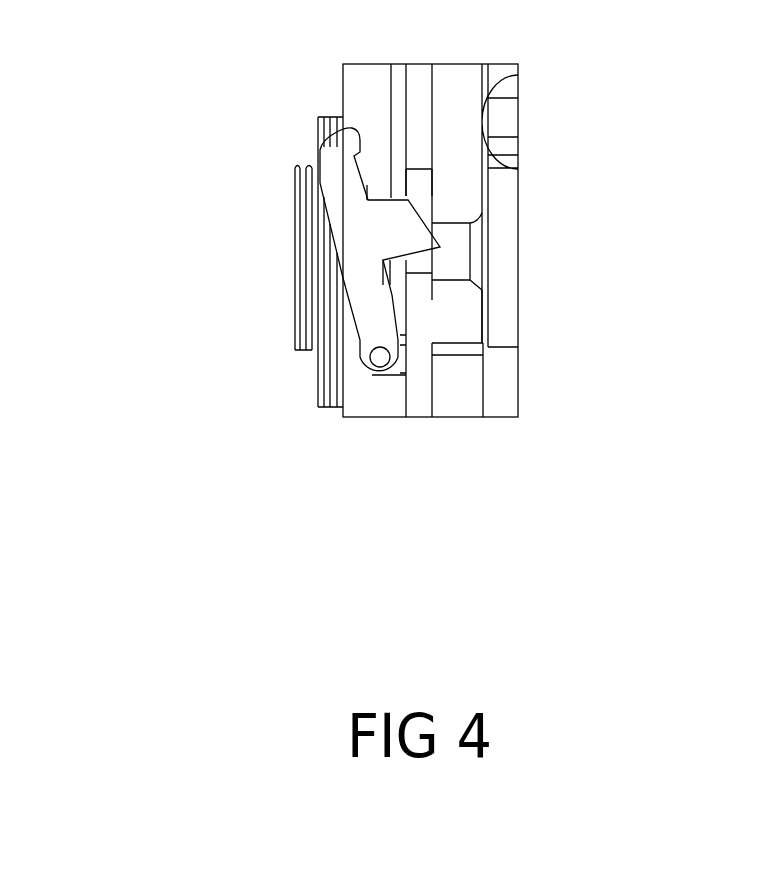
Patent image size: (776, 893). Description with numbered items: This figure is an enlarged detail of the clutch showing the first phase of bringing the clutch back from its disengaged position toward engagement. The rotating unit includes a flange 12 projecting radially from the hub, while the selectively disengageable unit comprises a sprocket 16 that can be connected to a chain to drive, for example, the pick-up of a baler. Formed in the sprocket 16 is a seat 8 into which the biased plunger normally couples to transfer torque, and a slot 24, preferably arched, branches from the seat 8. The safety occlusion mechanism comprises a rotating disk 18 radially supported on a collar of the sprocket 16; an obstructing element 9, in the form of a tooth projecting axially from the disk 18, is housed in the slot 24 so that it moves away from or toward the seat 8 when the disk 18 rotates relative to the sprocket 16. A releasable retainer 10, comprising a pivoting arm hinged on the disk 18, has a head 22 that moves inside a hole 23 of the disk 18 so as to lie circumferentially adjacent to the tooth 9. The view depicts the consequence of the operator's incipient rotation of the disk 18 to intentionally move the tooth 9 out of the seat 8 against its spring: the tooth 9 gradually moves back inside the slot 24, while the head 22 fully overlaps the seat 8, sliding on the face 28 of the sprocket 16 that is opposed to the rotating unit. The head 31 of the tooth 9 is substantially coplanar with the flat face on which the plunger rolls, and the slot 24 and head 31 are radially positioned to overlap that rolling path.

The seat 8 is at (453, 265).
The obstructing element 9 is at (460, 342).
The releasable retainer 10 is at (365, 335).
The flange 12 is at (512, 380).
The sprocket 16 is at (462, 80).
The rotating disk 18 is at (423, 90).
The head 22 is at (400, 236).
The hole 23 is at (420, 186).
The slot 24 is at (462, 352).
The face 28 is at (430, 133).
The head 31 is at (475, 312).